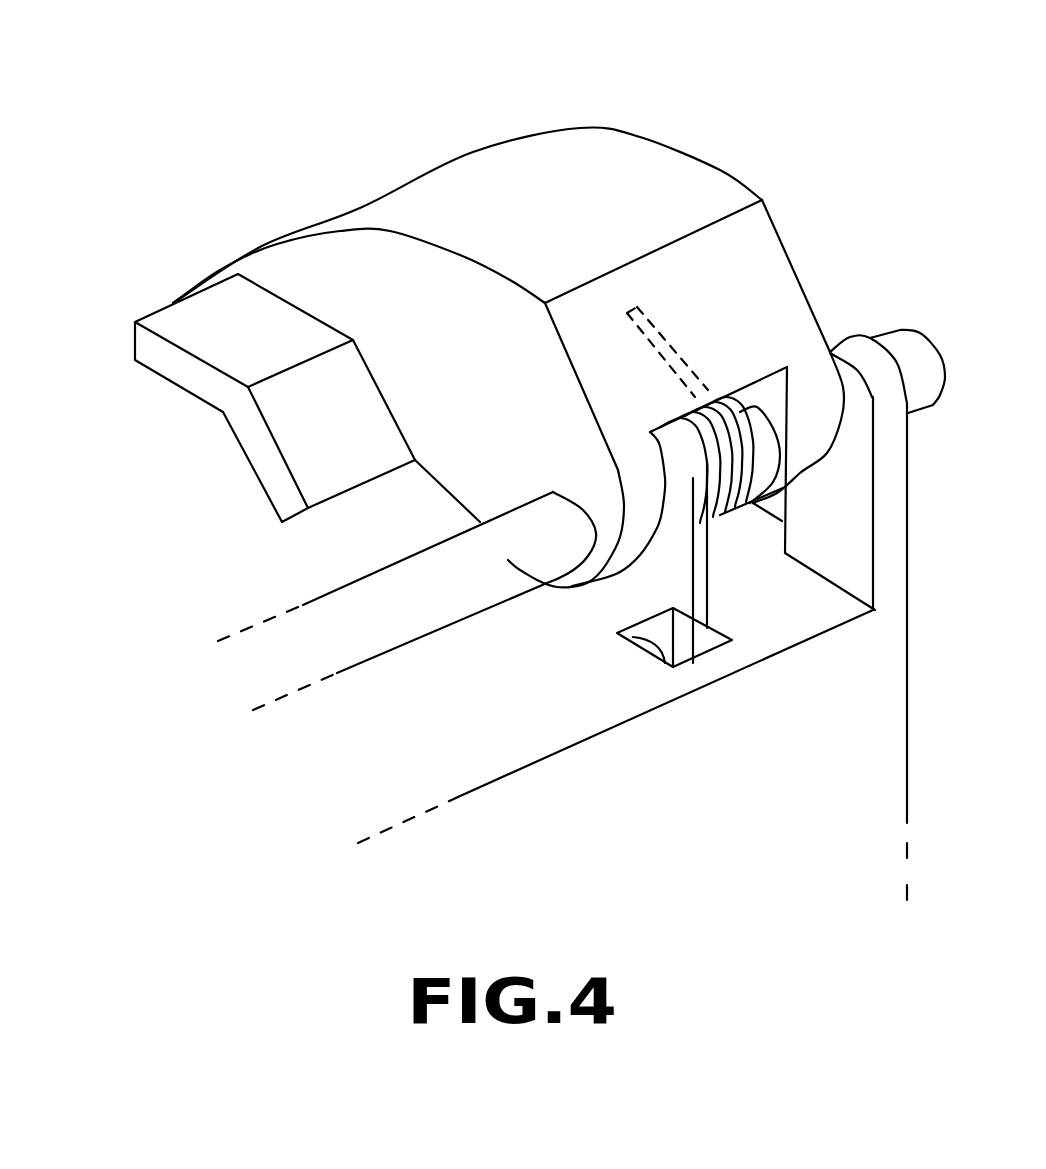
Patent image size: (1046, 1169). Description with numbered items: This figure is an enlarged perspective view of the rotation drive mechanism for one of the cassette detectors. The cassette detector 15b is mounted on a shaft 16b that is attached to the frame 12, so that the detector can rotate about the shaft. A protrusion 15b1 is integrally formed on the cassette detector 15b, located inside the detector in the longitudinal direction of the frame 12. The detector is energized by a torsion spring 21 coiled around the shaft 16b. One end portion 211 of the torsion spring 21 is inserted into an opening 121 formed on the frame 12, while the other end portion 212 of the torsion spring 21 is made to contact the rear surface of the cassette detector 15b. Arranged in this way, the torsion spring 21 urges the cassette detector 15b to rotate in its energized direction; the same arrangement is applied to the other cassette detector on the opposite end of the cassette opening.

The frame 12 is at (632, 617).
The opening 121 is at (617, 634).
The cassette detector 15b is at (492, 182).
The protrusion 15b1 is at (225, 323).
The shaft 16b is at (457, 602).
The torsion spring 21 is at (770, 494).
The one end portion 211 is at (698, 634).
The other end portion 212 is at (668, 347).